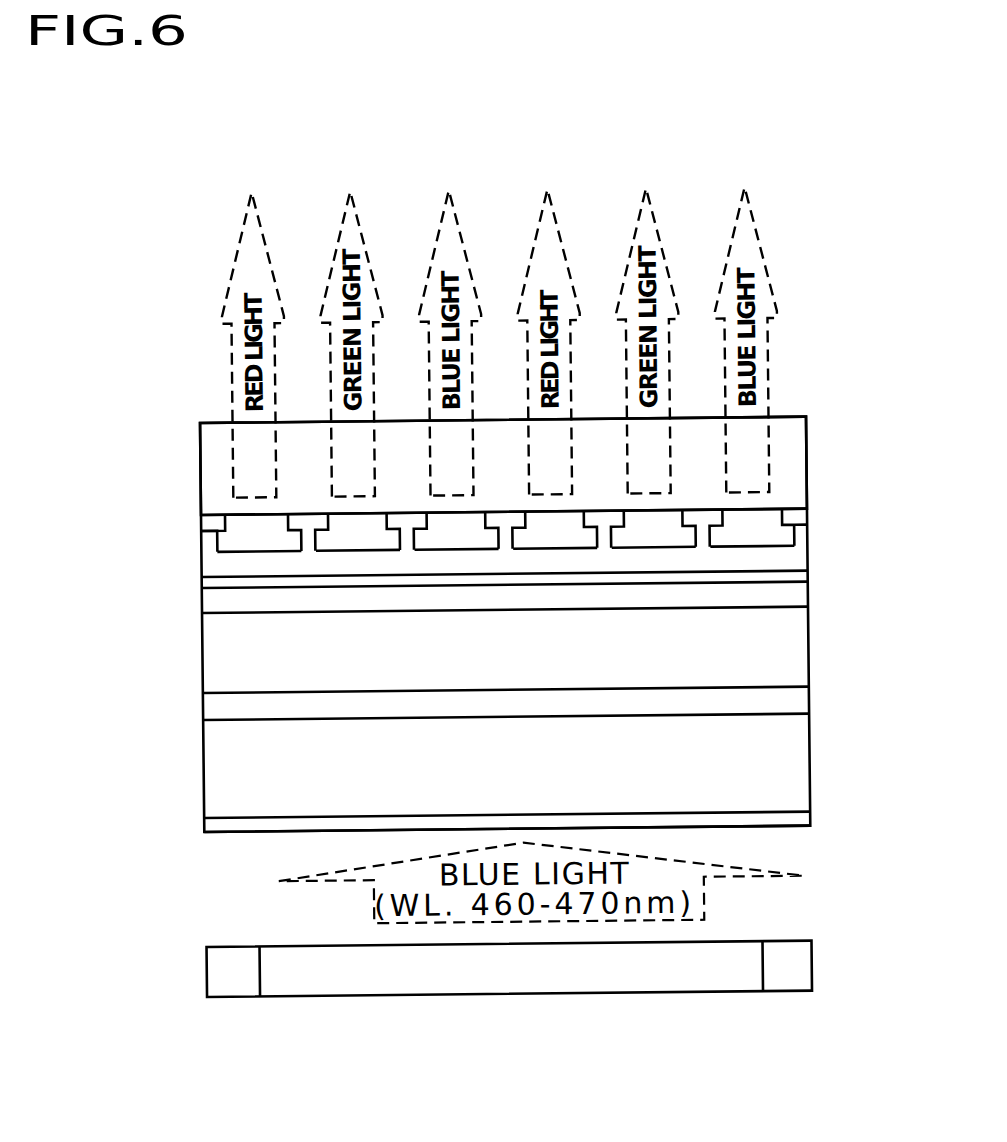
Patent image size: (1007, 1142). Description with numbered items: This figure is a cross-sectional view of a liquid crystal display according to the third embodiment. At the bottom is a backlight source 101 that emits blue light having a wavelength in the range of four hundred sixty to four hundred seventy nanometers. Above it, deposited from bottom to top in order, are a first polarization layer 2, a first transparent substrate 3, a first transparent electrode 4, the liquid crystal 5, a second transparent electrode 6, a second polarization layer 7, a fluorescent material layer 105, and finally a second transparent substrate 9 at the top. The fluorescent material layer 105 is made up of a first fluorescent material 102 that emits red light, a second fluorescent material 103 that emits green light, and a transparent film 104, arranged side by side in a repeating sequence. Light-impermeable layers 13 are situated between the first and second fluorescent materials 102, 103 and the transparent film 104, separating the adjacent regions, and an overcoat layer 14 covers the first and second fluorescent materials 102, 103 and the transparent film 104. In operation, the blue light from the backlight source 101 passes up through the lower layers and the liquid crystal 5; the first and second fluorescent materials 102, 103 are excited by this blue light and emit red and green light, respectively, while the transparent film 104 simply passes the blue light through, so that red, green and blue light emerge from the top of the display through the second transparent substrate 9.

The first polarization layer 2 is at (216, 827).
The first transparent substrate 3 is at (220, 771).
The first transparent electrode 4 is at (220, 706).
The liquid crystal 5 is at (792, 690).
The second transparent electrode 6 is at (220, 603).
The second polarization layer 7 is at (802, 586).
The second transparent substrate 9 is at (790, 466).
The light-impermeable layers 13 is at (212, 524).
The overcoat layer 14 is at (459, 601).
The backlight source 101 is at (320, 953).
The first fluorescent material 102 is at (250, 540).
The second fluorescent material 103 is at (343, 540).
The transparent film 104 is at (455, 540).
The fluorescent material layer 105 is at (503, 576).